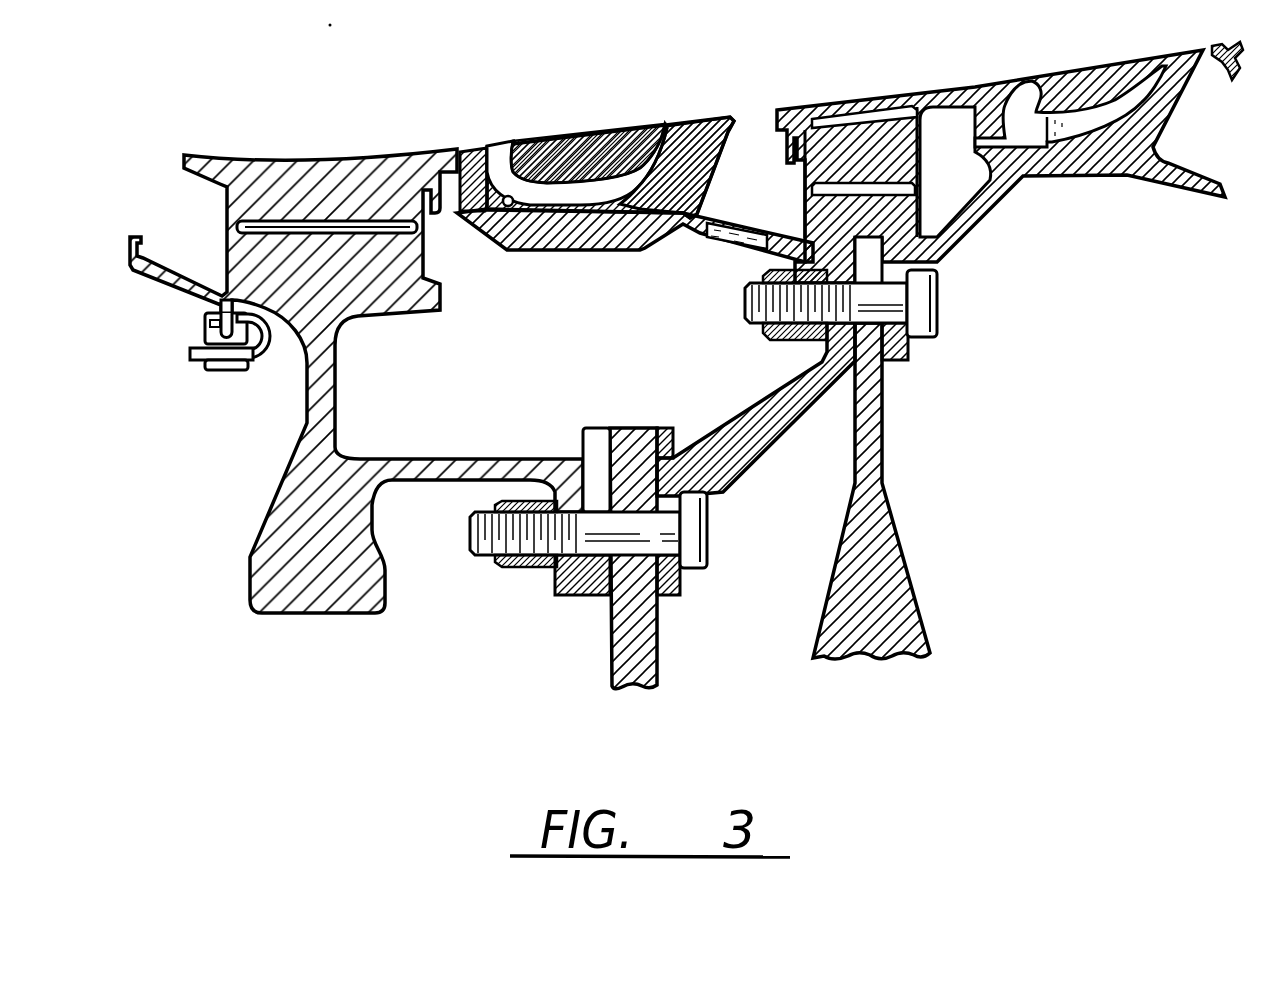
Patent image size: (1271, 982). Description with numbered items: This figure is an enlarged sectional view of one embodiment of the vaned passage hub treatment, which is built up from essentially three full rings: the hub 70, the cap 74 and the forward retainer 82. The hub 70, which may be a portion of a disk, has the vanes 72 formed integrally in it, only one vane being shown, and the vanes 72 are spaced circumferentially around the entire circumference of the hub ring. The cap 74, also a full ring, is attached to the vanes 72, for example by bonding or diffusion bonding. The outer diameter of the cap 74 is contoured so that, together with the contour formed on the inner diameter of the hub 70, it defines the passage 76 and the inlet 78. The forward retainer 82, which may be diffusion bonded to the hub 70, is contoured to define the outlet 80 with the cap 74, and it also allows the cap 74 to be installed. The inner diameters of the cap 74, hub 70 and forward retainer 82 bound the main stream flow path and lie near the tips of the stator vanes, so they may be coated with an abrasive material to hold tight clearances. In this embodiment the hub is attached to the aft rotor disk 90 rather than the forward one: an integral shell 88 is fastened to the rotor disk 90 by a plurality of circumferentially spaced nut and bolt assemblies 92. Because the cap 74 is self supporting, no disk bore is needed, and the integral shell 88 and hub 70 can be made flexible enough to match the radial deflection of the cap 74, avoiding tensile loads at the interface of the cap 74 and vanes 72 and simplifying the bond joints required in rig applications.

The hub 70 is at (607, 250).
The vanes 72 is at (672, 126).
The cap 74 is at (602, 136).
The passage 76 is at (505, 206).
The inlet 78 is at (696, 120).
The outlet 80 is at (520, 140).
The forward retainer 82 is at (490, 146).
The integral shell 88 is at (687, 213).
The rotor disk 90 is at (882, 457).
The nut and bolt assemblies 92 is at (940, 310).